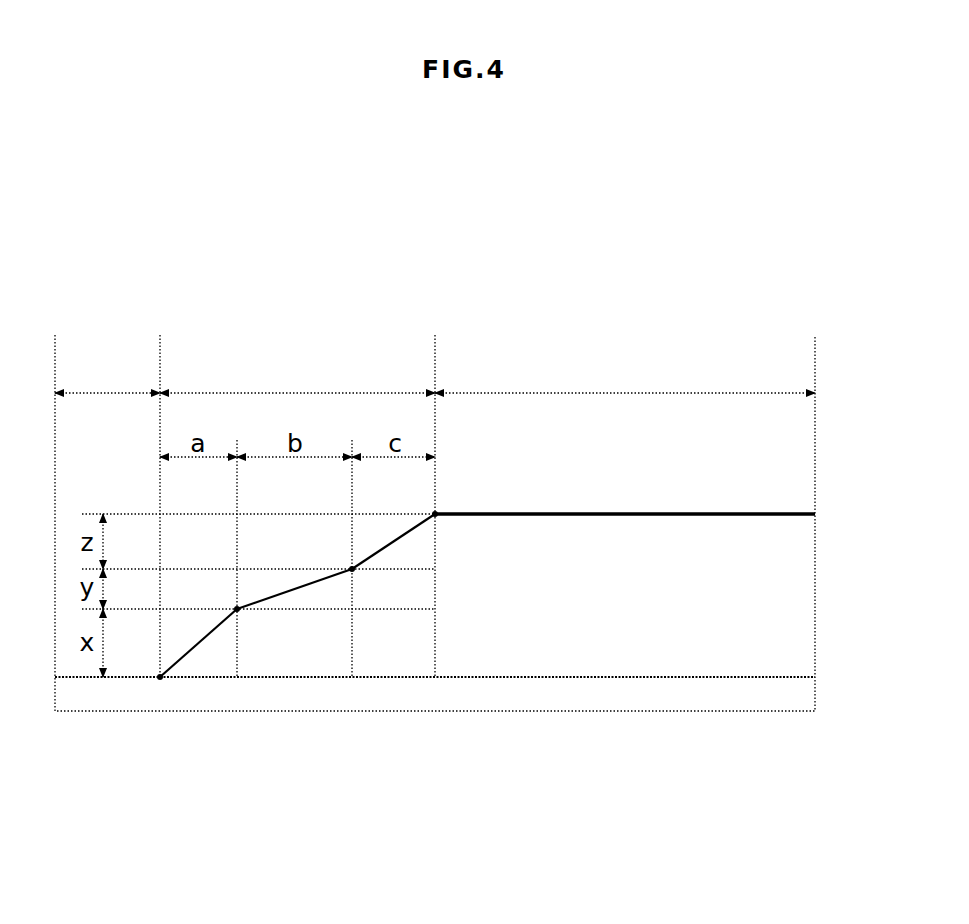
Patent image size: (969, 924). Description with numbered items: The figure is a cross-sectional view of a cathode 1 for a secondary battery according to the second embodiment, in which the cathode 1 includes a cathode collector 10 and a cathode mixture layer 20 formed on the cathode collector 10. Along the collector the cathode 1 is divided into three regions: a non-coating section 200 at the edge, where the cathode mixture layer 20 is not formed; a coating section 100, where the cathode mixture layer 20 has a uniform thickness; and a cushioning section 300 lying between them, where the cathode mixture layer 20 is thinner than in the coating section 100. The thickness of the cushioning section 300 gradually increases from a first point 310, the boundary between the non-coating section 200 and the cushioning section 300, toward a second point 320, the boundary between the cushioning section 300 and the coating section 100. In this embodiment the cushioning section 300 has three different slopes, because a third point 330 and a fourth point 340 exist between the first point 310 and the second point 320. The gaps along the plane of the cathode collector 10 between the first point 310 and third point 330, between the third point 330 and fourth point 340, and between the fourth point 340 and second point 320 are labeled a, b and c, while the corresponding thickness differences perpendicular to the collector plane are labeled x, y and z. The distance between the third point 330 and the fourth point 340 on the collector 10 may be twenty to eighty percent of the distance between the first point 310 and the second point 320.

The cathode for a secondary battery 1 is at (445, 196).
The cathode collector 10 is at (648, 690).
The cathode mixture layer 20 is at (763, 578).
The coating section 100 is at (625, 376).
The non-coating section 200 is at (107, 376).
The cushioning section 300 is at (297, 376).
The first point 310 is at (160, 677).
The second point 320 is at (437, 512).
The third point 330 is at (237, 609).
The fourth point 340 is at (352, 569).